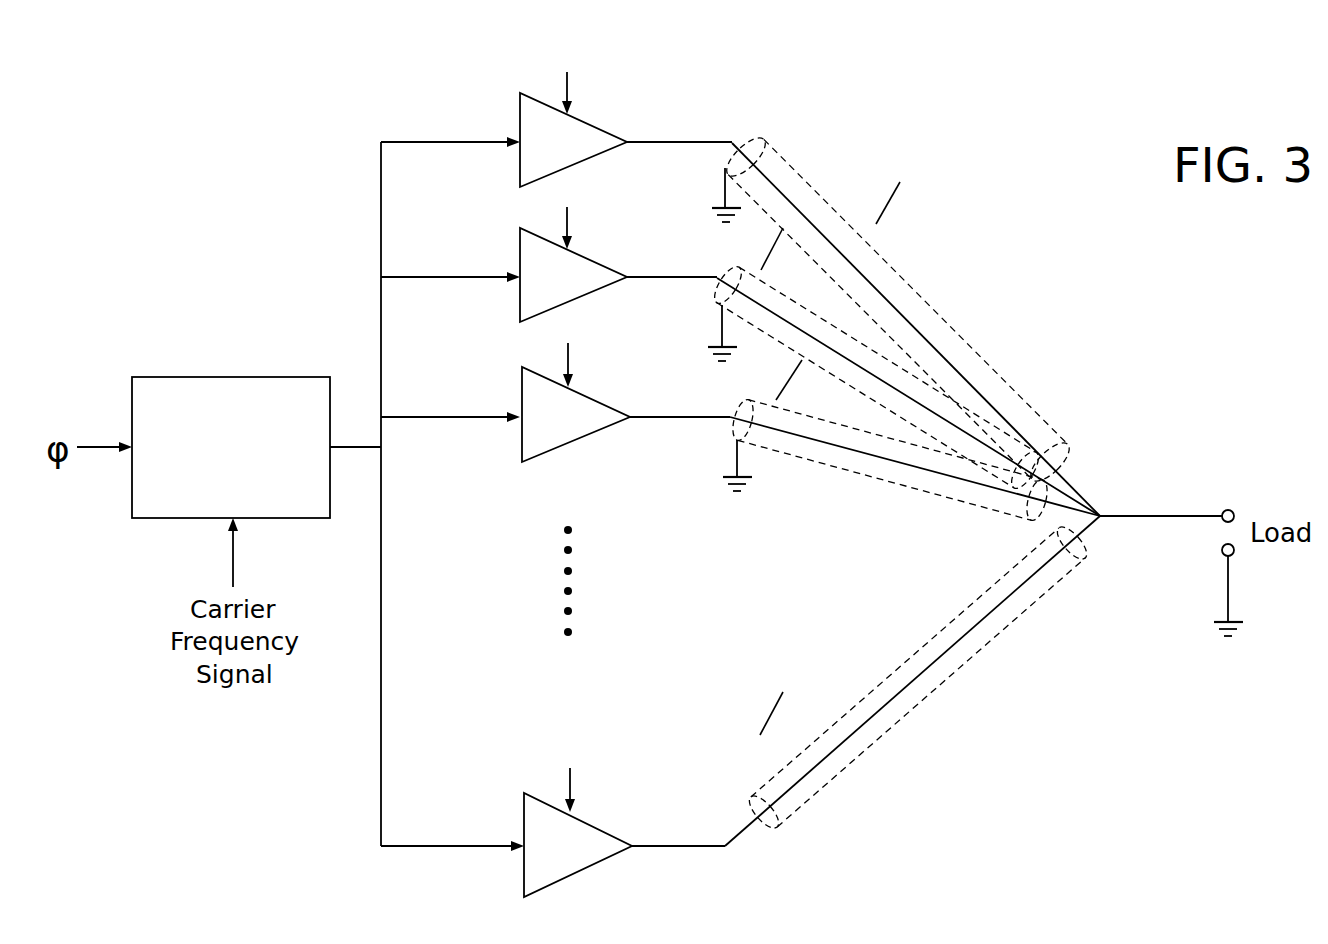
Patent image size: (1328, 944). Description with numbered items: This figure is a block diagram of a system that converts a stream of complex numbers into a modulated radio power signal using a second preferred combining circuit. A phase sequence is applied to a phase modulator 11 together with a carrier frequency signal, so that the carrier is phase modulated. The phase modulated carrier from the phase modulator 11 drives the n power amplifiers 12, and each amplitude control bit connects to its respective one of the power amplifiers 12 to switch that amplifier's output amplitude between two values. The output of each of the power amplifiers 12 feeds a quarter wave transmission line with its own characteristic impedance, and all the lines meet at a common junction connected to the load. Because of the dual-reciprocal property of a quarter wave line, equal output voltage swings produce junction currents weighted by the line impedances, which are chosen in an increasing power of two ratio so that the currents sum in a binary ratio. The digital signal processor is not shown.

The phase modulator 11 is at (260, 377).
The power amplifiers 12 is at (625, 244).